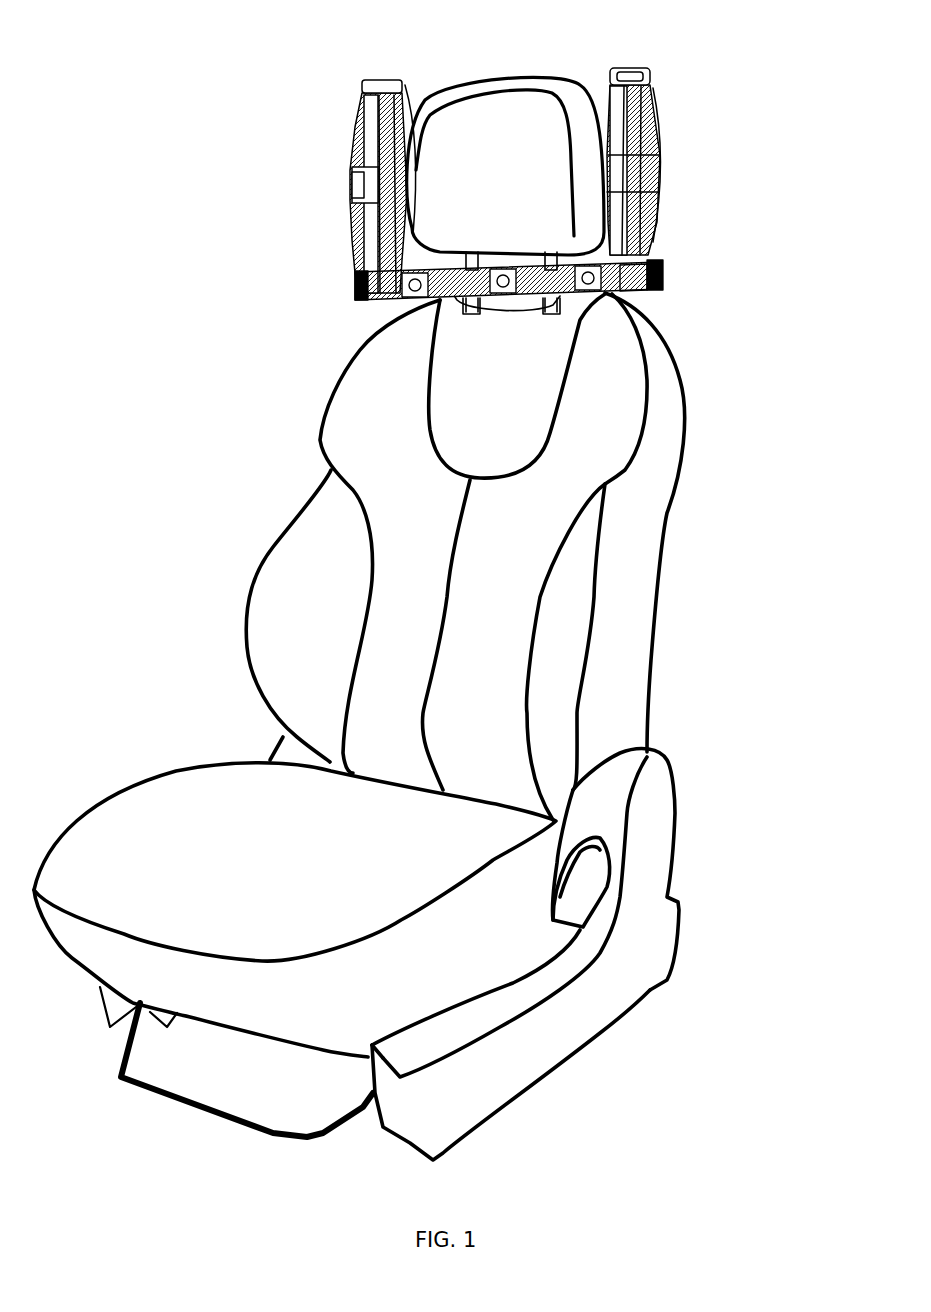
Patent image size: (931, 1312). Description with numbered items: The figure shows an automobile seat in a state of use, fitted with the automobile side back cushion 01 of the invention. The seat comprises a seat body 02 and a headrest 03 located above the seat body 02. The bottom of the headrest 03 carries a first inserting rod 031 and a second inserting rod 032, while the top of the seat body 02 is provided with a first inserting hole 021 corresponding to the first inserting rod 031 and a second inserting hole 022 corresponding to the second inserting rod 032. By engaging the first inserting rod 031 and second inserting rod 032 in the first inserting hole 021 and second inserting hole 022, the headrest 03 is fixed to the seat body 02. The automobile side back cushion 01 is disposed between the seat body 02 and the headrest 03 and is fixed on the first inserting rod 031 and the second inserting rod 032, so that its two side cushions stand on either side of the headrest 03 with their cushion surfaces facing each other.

The automobile side back cushion 01 is at (362, 192).
The seat body 02 is at (368, 437).
The first inserting hole 021 is at (547, 313).
The second inserting hole 022 is at (463, 317).
The headrest 03 is at (534, 172).
The first inserting rod 031 is at (625, 295).
The second inserting rod 032 is at (453, 263).